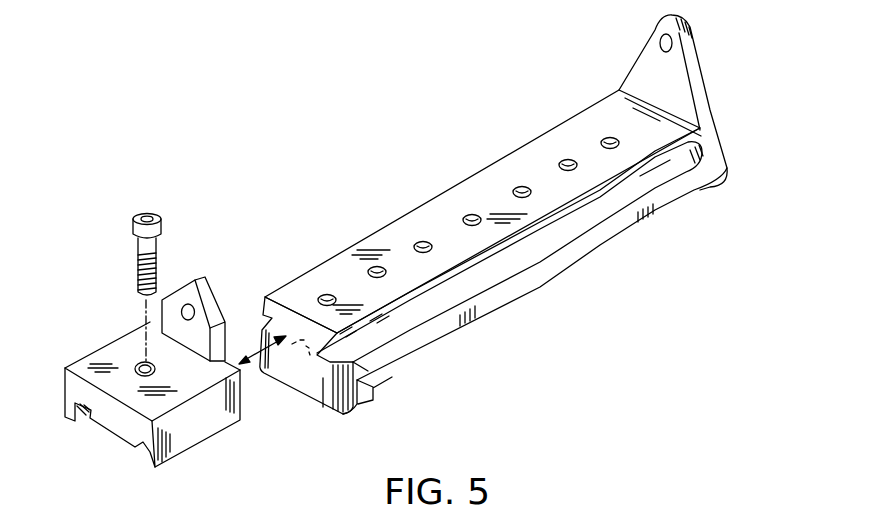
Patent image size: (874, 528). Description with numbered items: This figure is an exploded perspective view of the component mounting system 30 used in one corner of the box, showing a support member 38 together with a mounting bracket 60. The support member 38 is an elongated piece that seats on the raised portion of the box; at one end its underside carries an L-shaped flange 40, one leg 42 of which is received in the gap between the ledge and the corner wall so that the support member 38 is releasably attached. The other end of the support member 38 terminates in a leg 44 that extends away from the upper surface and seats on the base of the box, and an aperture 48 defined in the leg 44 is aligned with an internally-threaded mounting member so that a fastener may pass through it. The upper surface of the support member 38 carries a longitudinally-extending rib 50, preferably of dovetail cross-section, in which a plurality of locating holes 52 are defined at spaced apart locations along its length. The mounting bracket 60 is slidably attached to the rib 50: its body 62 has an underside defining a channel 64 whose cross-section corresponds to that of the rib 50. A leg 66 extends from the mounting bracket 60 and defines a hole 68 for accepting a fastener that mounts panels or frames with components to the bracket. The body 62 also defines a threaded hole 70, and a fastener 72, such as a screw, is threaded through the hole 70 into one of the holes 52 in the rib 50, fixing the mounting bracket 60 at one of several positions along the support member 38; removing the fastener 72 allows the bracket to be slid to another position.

The component mounting system 30 is at (360, 172).
The support member 38 is at (565, 293).
The L-shaped flange 40 is at (357, 397).
The leg 42 is at (373, 384).
The leg 44 is at (718, 113).
The aperture 48 is at (660, 45).
The rib 50 is at (662, 160).
The locating holes 52 is at (472, 214).
The mounting bracket 60 is at (90, 311).
The body 62 is at (167, 460).
The channel 64 is at (106, 447).
The leg 66 is at (191, 281).
The hole 68 is at (190, 314).
The threaded hole 70 is at (157, 370).
The fastener 72 is at (137, 262).